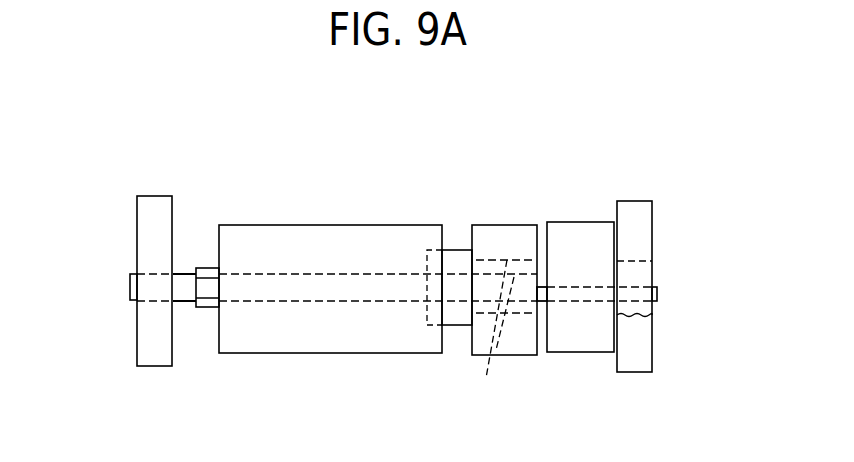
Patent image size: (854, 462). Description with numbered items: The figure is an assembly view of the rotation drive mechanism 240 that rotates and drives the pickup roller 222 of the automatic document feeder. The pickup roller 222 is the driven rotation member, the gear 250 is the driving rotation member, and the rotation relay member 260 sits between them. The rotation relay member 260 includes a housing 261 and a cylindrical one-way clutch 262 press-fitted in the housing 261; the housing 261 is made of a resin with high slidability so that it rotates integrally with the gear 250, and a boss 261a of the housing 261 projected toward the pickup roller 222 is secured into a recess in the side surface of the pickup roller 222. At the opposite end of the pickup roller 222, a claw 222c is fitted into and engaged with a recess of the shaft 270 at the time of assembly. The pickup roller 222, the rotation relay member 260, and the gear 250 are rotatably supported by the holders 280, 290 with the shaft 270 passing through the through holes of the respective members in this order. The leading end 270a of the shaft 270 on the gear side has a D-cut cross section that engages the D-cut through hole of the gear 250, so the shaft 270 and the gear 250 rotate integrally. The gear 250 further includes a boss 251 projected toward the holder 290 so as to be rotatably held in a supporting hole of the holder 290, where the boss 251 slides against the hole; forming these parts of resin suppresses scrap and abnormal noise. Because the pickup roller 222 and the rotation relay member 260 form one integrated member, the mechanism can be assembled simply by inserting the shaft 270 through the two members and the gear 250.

The rotation drive mechanism 240 is at (405, 135).
The pickup roller 222 is at (308, 224).
The claw 222c is at (210, 308).
The gear 250 is at (567, 222).
The boss 251 is at (652, 272).
The rotation relay member 260 is at (518, 212).
The housing 261 is at (483, 224).
The boss 261a is at (453, 325).
The cylindrical one-way clutch 262 is at (492, 334).
The shaft 270 is at (130, 298).
The leading end 270a is at (657, 290).
The holder 280 is at (150, 366).
The holder 290 is at (632, 372).